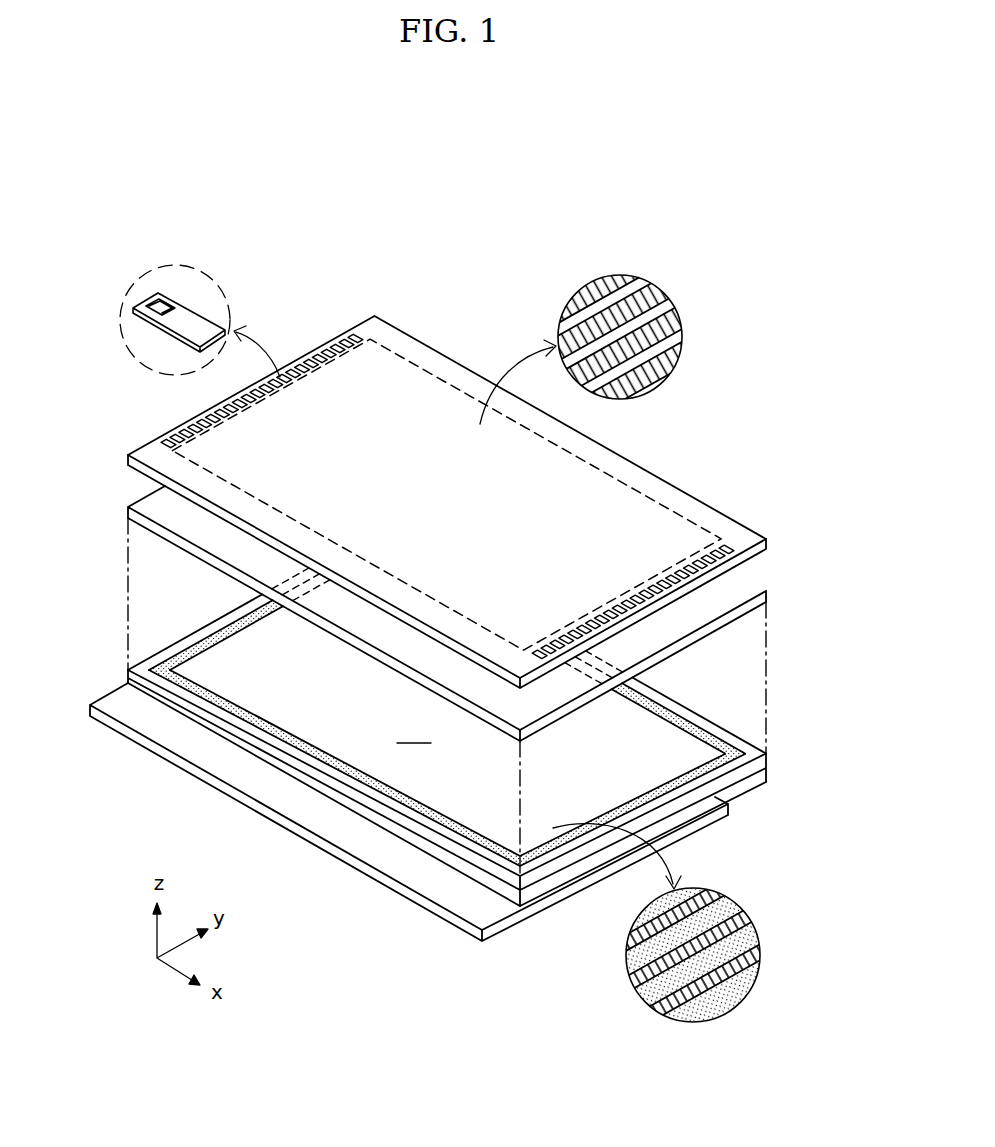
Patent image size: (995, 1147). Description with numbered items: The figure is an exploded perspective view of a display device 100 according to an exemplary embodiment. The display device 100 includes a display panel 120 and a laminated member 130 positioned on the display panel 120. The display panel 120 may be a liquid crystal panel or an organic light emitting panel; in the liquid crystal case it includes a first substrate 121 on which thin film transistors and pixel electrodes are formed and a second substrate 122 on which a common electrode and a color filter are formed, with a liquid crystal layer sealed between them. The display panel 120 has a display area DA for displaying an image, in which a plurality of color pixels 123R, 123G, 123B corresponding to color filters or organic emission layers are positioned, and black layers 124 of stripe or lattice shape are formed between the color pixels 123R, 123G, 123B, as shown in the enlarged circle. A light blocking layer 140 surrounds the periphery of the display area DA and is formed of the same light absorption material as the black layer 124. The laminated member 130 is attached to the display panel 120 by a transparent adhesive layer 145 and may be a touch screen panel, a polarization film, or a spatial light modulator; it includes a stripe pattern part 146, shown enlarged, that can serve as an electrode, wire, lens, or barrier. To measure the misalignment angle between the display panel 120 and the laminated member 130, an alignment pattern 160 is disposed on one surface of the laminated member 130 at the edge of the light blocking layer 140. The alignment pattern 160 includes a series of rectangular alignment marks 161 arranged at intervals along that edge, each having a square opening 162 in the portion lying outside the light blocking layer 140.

The display device 100 is at (431, 210).
The display panel 120 is at (462, 724).
The first substrate 121 is at (443, 918).
The second substrate 122 is at (725, 785).
The color pixel 123R is at (657, 891).
The color pixel 123G is at (681, 933).
The color pixel 123B is at (637, 913).
The black layer 124 is at (677, 954).
The laminated member 130 is at (681, 478).
The light blocking layer 140 is at (215, 633).
The transparent adhesive layer 145 is at (148, 507).
The stripe pattern part 146 is at (684, 328).
The alignment pattern 160 is at (321, 337).
The alignment mark 161 is at (193, 304).
The opening 162 is at (157, 302).